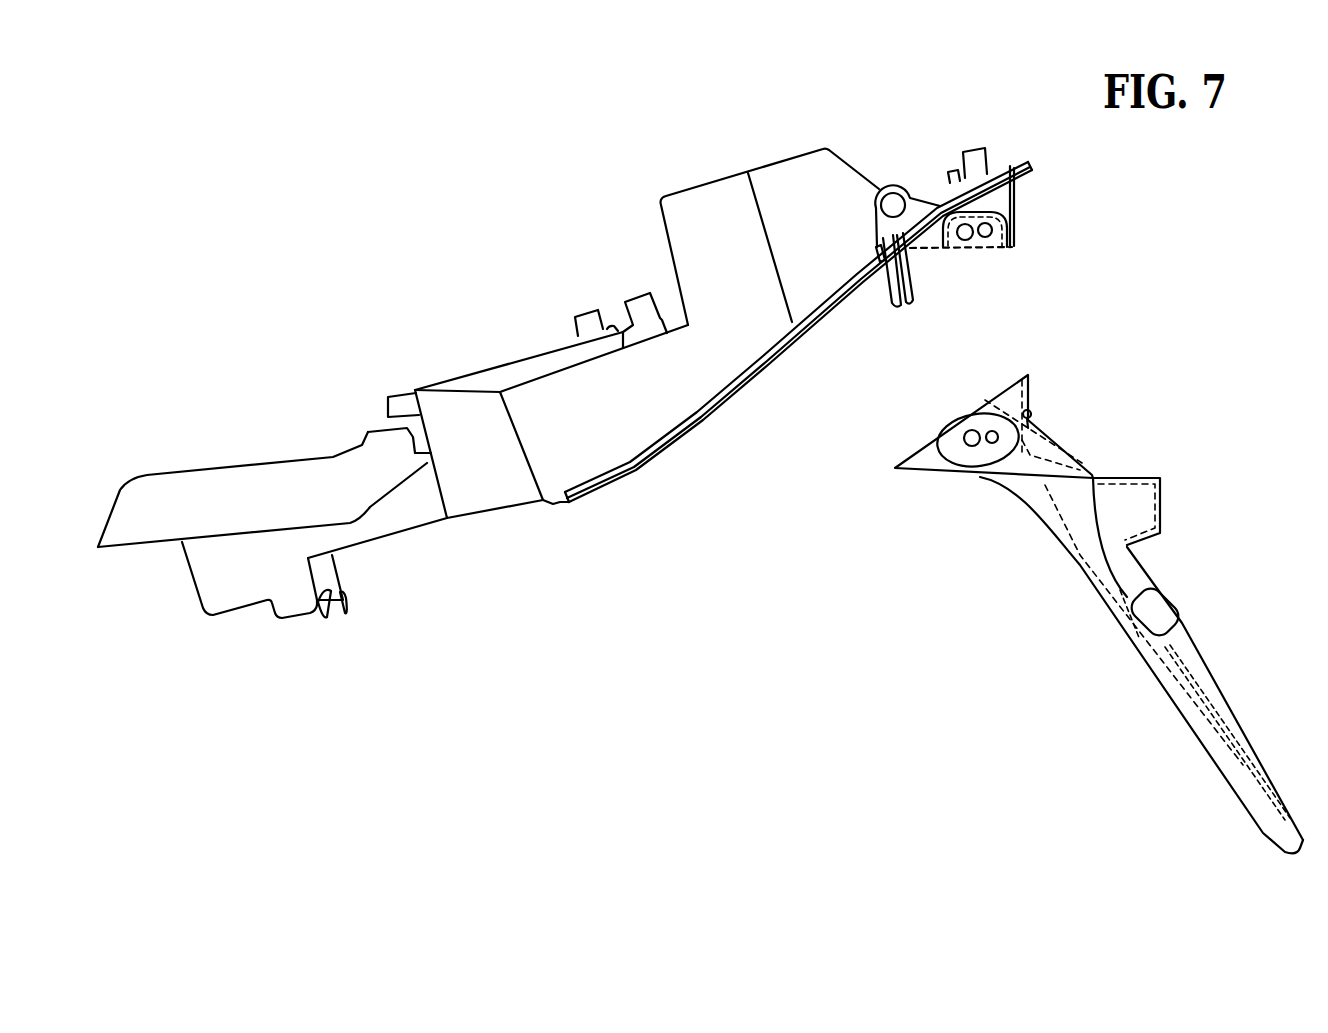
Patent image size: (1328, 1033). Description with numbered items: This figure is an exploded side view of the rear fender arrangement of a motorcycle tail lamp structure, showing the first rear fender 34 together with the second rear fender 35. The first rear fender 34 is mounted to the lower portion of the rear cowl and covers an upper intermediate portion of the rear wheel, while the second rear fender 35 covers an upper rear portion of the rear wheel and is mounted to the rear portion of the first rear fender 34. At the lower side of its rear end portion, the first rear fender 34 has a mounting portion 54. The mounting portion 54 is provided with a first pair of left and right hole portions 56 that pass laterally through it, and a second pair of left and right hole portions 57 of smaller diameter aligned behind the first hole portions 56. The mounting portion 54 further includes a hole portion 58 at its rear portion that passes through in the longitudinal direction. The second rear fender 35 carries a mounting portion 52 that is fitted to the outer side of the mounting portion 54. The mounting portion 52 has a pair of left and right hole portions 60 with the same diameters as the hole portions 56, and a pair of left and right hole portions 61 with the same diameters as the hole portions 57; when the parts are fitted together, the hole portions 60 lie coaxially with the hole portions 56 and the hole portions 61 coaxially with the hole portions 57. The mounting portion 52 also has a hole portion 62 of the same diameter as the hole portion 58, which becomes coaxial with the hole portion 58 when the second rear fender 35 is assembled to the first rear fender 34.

The first rear fender 34 is at (836, 143).
The second rear fender 35 is at (1168, 472).
The mounting portion 52 is at (977, 403).
The mounting portion 54 is at (1013, 245).
The first hole portions 56 is at (957, 250).
The second hole portions 57 is at (987, 247).
The hole portion 58 is at (1017, 203).
The hole portions 60 is at (965, 445).
The hole portions 61 is at (988, 442).
The hole portion 62 is at (1037, 413).